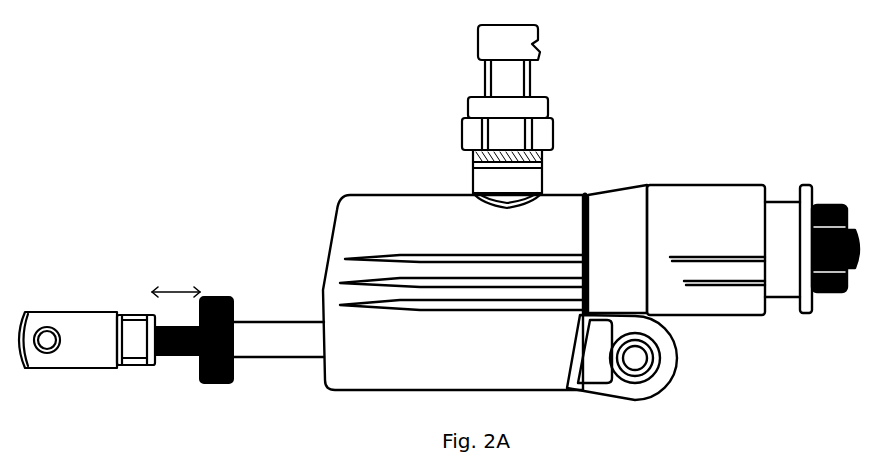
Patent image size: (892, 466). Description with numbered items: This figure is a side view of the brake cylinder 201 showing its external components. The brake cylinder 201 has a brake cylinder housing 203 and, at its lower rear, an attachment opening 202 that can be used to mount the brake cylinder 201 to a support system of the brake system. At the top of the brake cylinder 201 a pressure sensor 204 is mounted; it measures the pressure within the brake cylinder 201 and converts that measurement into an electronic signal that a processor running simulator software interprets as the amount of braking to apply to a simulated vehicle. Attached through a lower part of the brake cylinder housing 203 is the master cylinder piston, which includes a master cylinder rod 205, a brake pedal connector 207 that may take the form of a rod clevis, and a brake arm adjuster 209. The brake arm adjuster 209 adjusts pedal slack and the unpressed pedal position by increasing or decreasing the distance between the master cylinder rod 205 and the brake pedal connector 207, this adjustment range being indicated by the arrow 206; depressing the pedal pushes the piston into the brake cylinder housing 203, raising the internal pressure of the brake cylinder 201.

The brake cylinder 201 is at (640, 152).
The attachment opening 202 is at (653, 380).
The brake cylinder housing 203 is at (380, 205).
The pressure sensor 204 is at (540, 43).
The master cylinder rod 205 is at (273, 345).
The adjustment travel 206 is at (177, 290).
The brake pedal connector 207 is at (42, 363).
The brake arm adjuster 209 is at (222, 385).